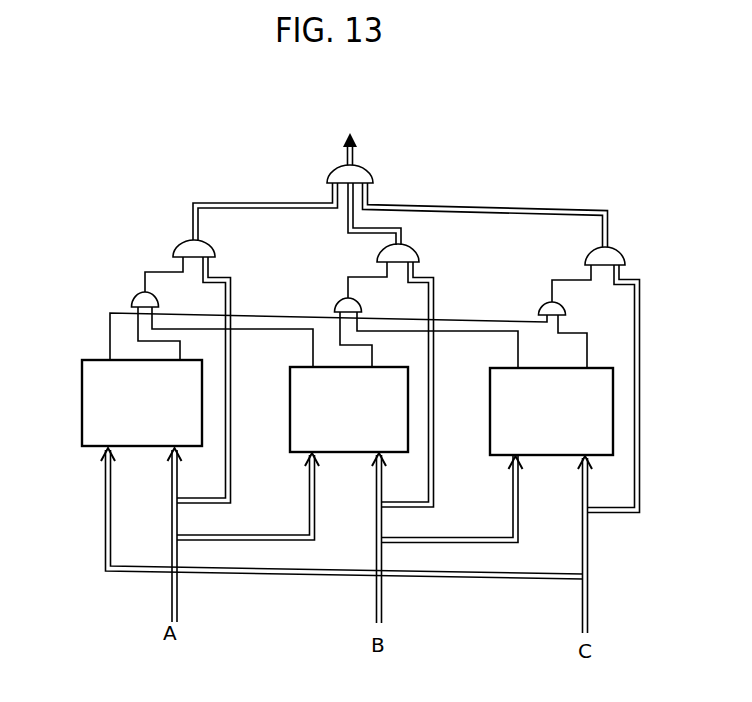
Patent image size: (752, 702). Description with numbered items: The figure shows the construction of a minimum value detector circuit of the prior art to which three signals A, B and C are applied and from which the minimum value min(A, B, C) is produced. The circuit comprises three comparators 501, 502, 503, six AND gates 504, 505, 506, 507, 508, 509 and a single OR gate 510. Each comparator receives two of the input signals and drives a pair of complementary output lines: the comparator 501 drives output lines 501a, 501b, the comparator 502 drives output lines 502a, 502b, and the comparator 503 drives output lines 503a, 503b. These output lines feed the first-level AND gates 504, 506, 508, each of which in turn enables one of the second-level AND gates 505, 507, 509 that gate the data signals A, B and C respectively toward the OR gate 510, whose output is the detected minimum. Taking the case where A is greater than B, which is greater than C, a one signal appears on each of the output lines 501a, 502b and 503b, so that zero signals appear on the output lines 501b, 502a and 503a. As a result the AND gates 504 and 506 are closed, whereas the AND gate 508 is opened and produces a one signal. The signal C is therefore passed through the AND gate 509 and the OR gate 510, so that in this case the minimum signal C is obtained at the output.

The comparator 501 is at (82, 421).
The output line of comparator 501 501a is at (110, 345).
The output line of comparator 501 501b is at (180, 346).
The comparator 502 is at (290, 423).
The output line of comparator 502 502a is at (313, 342).
The output line of comparator 502 502b is at (369, 360).
The comparator 503 is at (490, 427).
The output line of comparator 503 503a is at (518, 344).
The output line of comparator 503 503b is at (587, 349).
The AND gate 504 is at (159, 300).
The AND gate 505 is at (216, 251).
The AND gate 506 is at (360, 306).
The AND gate 507 is at (419, 257).
The AND gate 508 is at (564, 307).
The AND gate 509 is at (625, 259).
The OR gate 510 is at (375, 174).